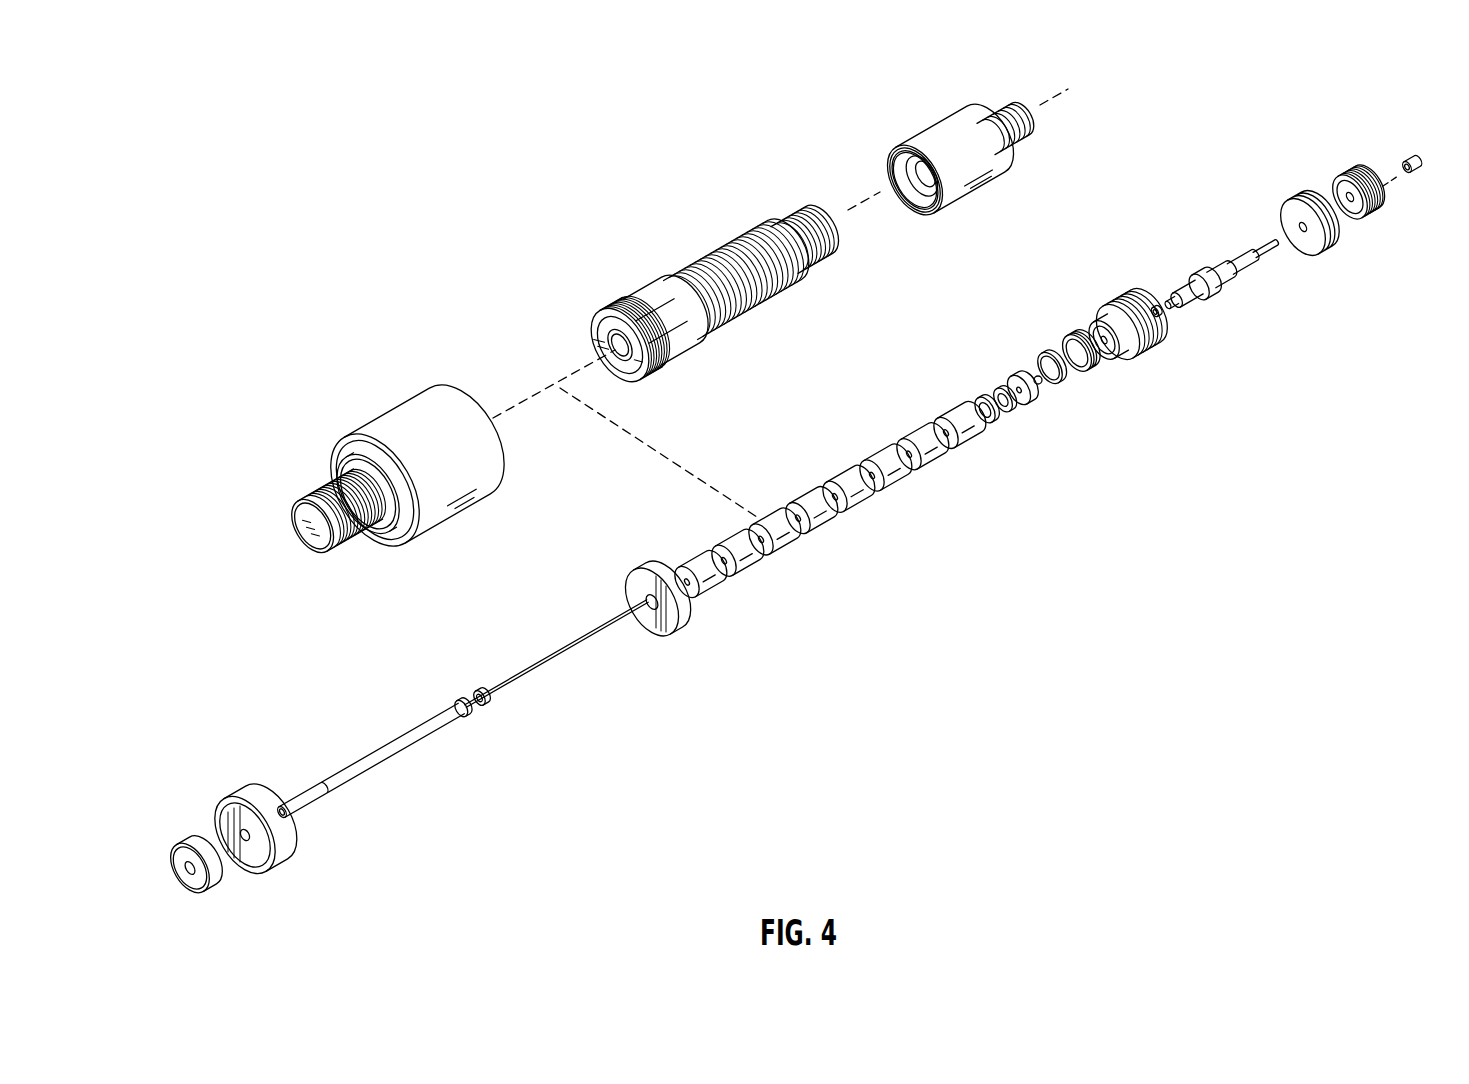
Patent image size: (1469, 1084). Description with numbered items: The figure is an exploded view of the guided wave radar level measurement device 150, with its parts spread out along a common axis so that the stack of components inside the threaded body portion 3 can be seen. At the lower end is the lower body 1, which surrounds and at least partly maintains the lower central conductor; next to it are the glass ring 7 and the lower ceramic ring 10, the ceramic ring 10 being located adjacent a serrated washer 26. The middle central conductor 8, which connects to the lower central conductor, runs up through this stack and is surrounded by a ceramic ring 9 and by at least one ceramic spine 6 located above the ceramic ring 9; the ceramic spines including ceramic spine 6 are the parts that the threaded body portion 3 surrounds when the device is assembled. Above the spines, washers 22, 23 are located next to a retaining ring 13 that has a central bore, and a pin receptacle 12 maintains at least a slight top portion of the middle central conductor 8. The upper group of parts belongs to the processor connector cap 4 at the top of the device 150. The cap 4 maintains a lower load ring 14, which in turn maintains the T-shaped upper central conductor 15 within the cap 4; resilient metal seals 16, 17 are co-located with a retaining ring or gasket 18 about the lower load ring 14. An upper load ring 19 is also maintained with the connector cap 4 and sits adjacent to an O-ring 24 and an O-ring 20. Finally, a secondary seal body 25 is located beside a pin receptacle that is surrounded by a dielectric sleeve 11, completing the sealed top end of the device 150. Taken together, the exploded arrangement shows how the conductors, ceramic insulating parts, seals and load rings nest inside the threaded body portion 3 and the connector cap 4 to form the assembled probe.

The guided wave radar level measurement device 150 is at (809, 501).
The lower body 1 is at (378, 424).
The threaded body portion 3 is at (703, 238).
The processor connector cap 4 is at (925, 132).
The ceramic spine 6 is at (707, 587).
The glass ring 7 is at (222, 888).
The middle central conductor 8 is at (566, 659).
The ceramic ring 9 is at (665, 630).
The lower ceramic ring 10 is at (278, 866).
The dielectric sleeve 11 is at (1413, 163).
The pin receptacle 12 is at (1045, 381).
The retaining ring 13 is at (973, 403).
The lower load ring 14 is at (1140, 360).
The upper central conductor 15 is at (1200, 268).
The resilient metal seal 16 is at (1160, 318).
The resilient metal seal 17 is at (1048, 358).
The gasket 18 is at (1067, 334).
The upper load ring 19 is at (1322, 252).
The O-ring 20 is at (1360, 217).
The washer 22 is at (1008, 382).
The washer 23 is at (1010, 404).
The O-ring 24 is at (1347, 177).
The secondary seal body 25 is at (1373, 196).
The serrated washer 26 is at (492, 705).